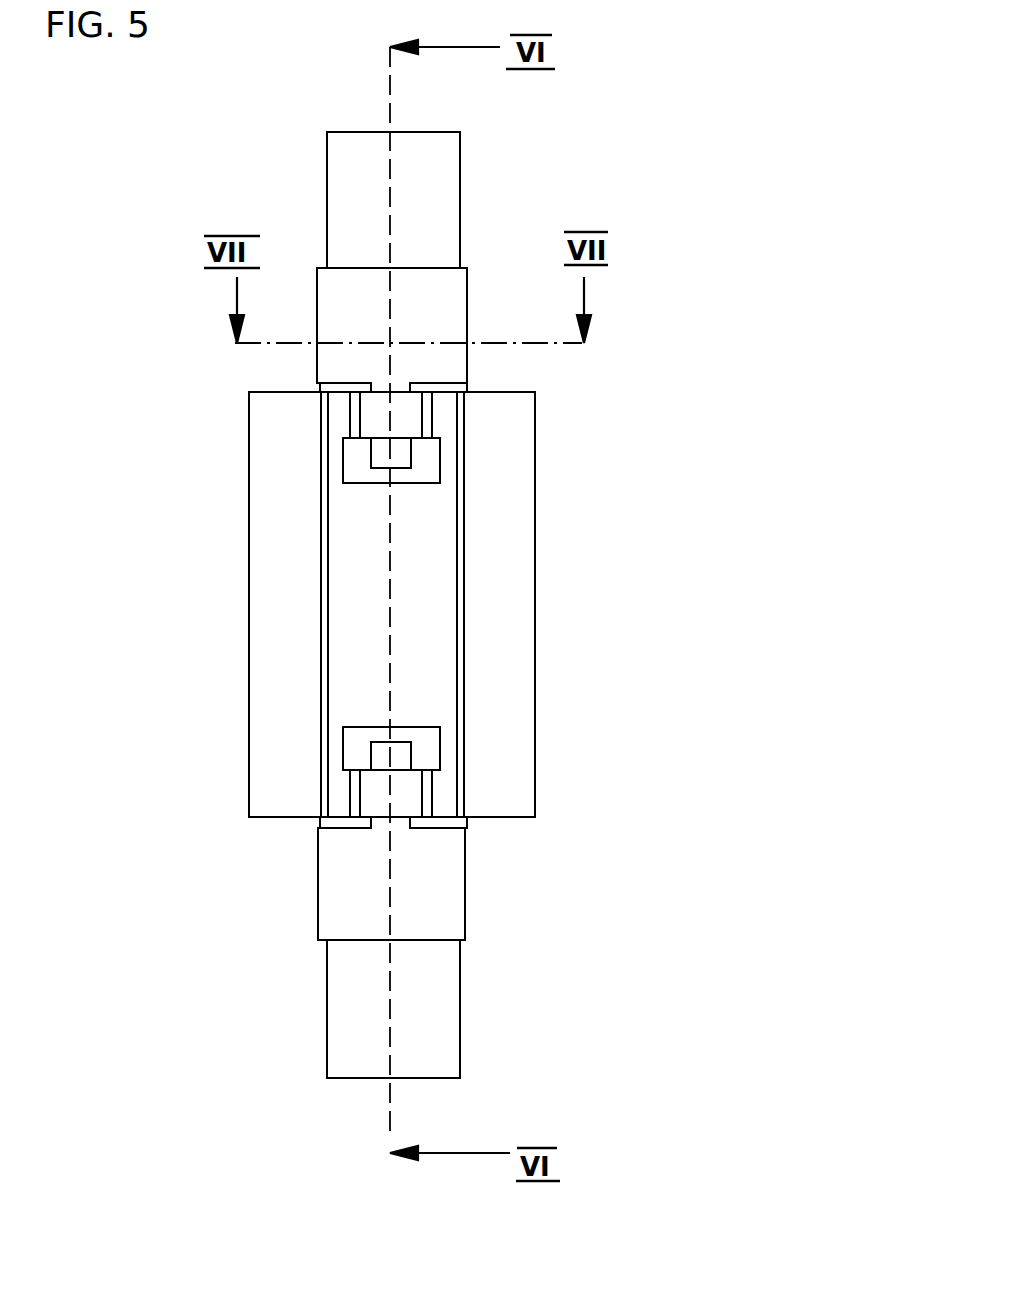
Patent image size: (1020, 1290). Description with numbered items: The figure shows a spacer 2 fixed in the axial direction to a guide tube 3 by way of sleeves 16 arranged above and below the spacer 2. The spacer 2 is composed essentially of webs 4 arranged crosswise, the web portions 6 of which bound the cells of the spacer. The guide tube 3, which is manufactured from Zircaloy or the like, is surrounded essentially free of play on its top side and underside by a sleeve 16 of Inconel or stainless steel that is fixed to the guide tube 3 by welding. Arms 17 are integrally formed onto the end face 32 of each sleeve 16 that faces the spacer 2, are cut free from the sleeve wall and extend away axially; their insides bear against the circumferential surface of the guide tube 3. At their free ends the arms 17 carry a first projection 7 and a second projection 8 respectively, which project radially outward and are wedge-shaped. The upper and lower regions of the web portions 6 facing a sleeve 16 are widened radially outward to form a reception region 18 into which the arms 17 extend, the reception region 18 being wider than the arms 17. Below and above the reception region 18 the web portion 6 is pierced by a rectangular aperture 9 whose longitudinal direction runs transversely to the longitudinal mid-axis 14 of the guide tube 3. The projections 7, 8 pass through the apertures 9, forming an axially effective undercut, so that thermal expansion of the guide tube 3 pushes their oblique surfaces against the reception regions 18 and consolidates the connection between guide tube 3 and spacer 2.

The spacer 2 is at (535, 583).
The guide tube 3 is at (453, 180).
The web 4 is at (522, 523).
The web portion 6 is at (375, 558).
The first projection 7 is at (373, 458).
The second projection 8 is at (385, 757).
The aperture 9 is at (440, 460).
The longitudinal mid-axis 14 is at (387, 1010).
The sleeve 16 is at (455, 293).
The arm 17 is at (398, 385).
The reception region 18 is at (410, 414).
The end face 32 is at (340, 420).